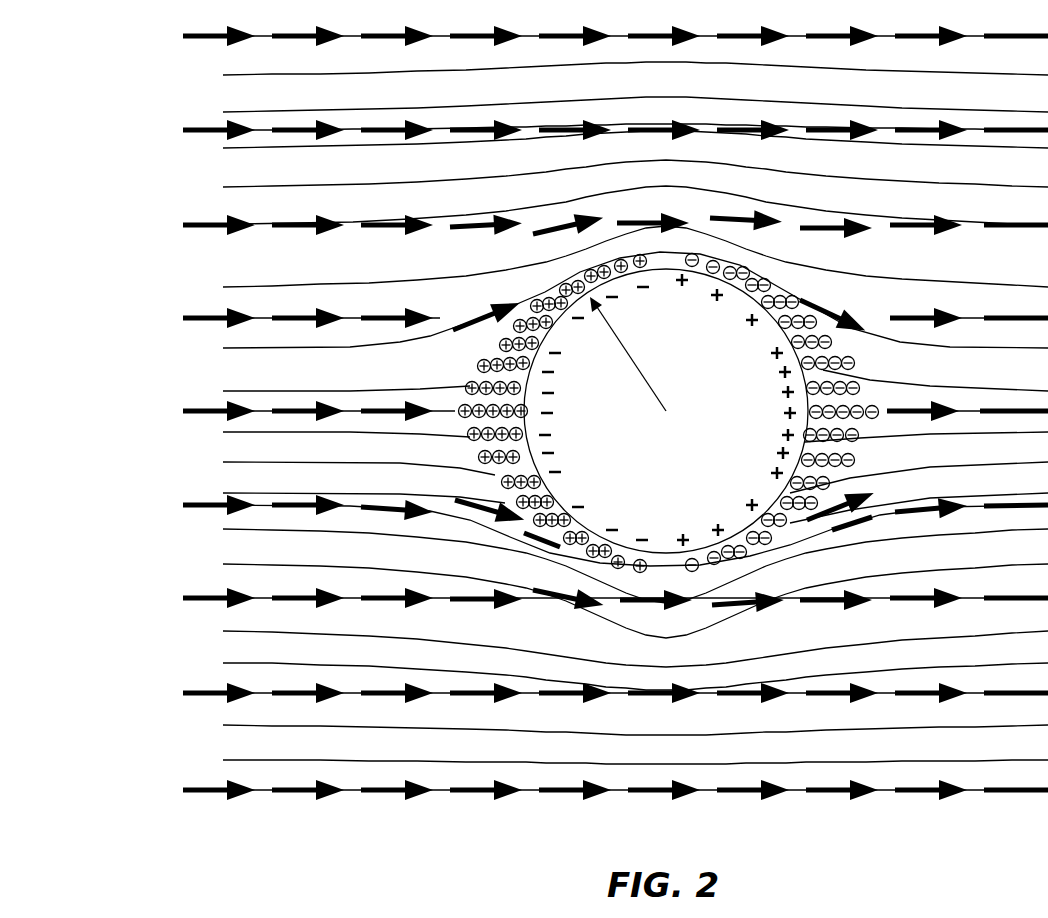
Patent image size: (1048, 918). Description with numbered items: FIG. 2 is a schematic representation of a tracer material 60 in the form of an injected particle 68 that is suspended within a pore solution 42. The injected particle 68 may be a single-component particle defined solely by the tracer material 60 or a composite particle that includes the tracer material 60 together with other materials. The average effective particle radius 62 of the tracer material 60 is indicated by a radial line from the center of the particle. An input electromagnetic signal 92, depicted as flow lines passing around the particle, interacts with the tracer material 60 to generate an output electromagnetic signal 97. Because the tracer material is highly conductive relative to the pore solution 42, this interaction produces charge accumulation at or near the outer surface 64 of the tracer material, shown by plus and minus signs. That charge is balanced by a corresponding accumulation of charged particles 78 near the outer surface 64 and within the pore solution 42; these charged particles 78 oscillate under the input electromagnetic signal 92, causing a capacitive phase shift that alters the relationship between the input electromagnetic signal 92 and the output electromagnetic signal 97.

The pore solution 42 is at (262, 630).
The tracer material 60 is at (663, 570).
The average effective particle radius 62 is at (630, 357).
The outer surface 64 is at (703, 556).
The injected particle 68 is at (708, 473).
The charged particles 78 is at (478, 440).
The input electromagnetic signal 92 is at (204, 506).
The output electromagnetic signal 97 is at (916, 318).